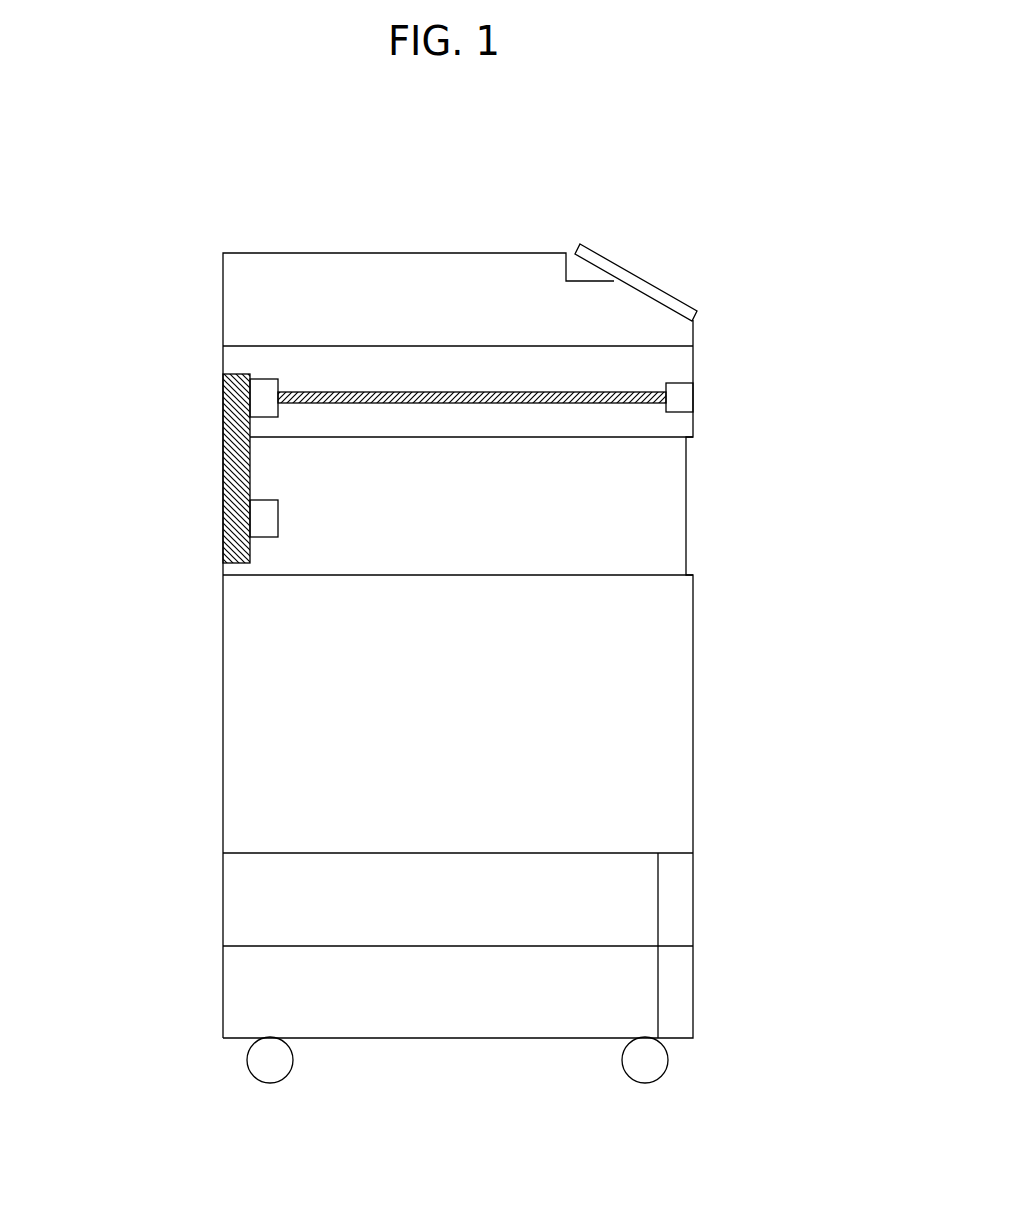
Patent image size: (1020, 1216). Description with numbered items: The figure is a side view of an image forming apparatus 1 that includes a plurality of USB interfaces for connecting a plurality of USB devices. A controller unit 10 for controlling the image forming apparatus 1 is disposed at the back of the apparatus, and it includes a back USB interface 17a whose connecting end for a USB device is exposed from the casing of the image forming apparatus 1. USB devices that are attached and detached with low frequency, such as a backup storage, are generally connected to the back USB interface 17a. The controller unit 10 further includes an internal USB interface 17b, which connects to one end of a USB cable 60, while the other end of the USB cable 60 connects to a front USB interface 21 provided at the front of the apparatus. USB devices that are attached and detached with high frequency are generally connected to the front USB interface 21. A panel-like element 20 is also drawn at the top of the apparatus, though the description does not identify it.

The image forming apparatus 1 is at (228, 215).
The controller unit 10 is at (223, 465).
The back USB interface 17a is at (262, 522).
The internal USB interface 17b is at (262, 399).
The operation panel 20 is at (660, 288).
The front USB interface 21 is at (680, 397).
The USB cable 60 is at (450, 392).